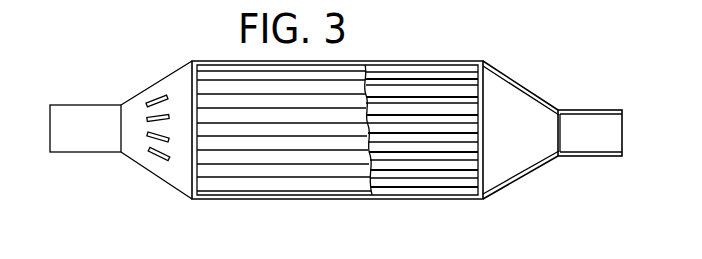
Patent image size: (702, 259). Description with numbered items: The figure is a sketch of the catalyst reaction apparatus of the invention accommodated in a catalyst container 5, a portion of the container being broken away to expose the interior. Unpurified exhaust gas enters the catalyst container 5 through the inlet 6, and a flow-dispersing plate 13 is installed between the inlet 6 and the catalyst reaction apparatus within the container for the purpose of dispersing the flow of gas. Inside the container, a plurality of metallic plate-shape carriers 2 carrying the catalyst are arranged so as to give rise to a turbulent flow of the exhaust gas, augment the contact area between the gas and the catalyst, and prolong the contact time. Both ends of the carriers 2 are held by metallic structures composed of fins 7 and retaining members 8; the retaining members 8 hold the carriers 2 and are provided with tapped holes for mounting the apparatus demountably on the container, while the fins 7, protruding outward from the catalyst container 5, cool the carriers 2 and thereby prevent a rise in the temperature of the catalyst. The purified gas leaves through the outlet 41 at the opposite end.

The metallic plate-shape carrier 2 is at (447, 97).
The catalyst container 5 is at (428, 64).
The inlet 6 is at (80, 120).
The fin 7 is at (302, 158).
The retaining member 8 is at (422, 170).
The flow-dispersing plate 13 is at (155, 100).
The outlet pipe 41 is at (593, 128).